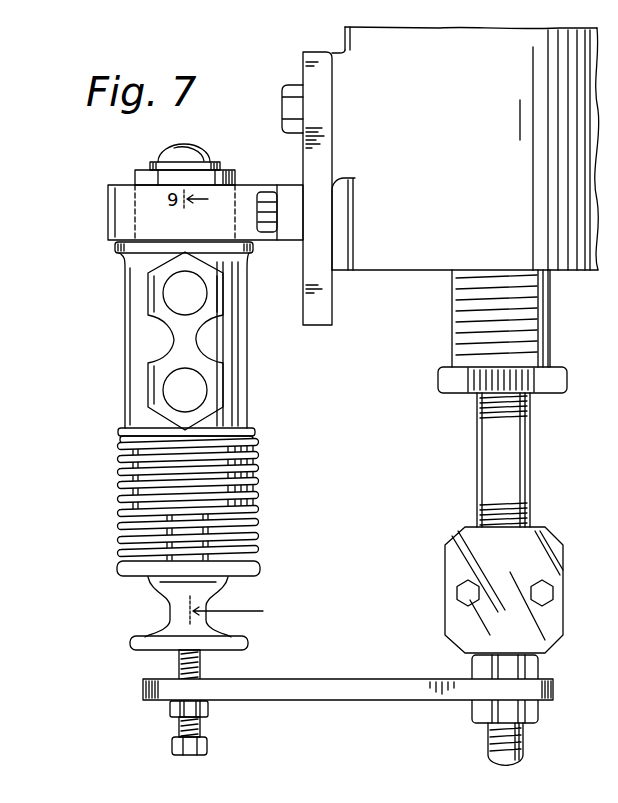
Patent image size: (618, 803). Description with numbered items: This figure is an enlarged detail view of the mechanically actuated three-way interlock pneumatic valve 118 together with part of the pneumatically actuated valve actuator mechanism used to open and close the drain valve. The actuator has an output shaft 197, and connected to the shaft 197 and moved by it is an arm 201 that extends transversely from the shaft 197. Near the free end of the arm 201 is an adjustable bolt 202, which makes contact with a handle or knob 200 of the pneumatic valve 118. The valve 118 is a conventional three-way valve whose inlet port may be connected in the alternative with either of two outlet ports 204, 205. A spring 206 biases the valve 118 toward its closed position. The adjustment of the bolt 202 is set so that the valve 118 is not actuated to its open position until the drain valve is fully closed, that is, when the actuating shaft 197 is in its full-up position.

The pneumatic valve 118 is at (262, 374).
The output shaft 197 is at (507, 497).
The handle or knob 200 is at (178, 606).
The arm 201 is at (330, 690).
The adjustable bolt 202 is at (185, 662).
The outlet port 204 is at (170, 388).
The outlet port 205 is at (168, 292).
The spring 206 is at (257, 471).